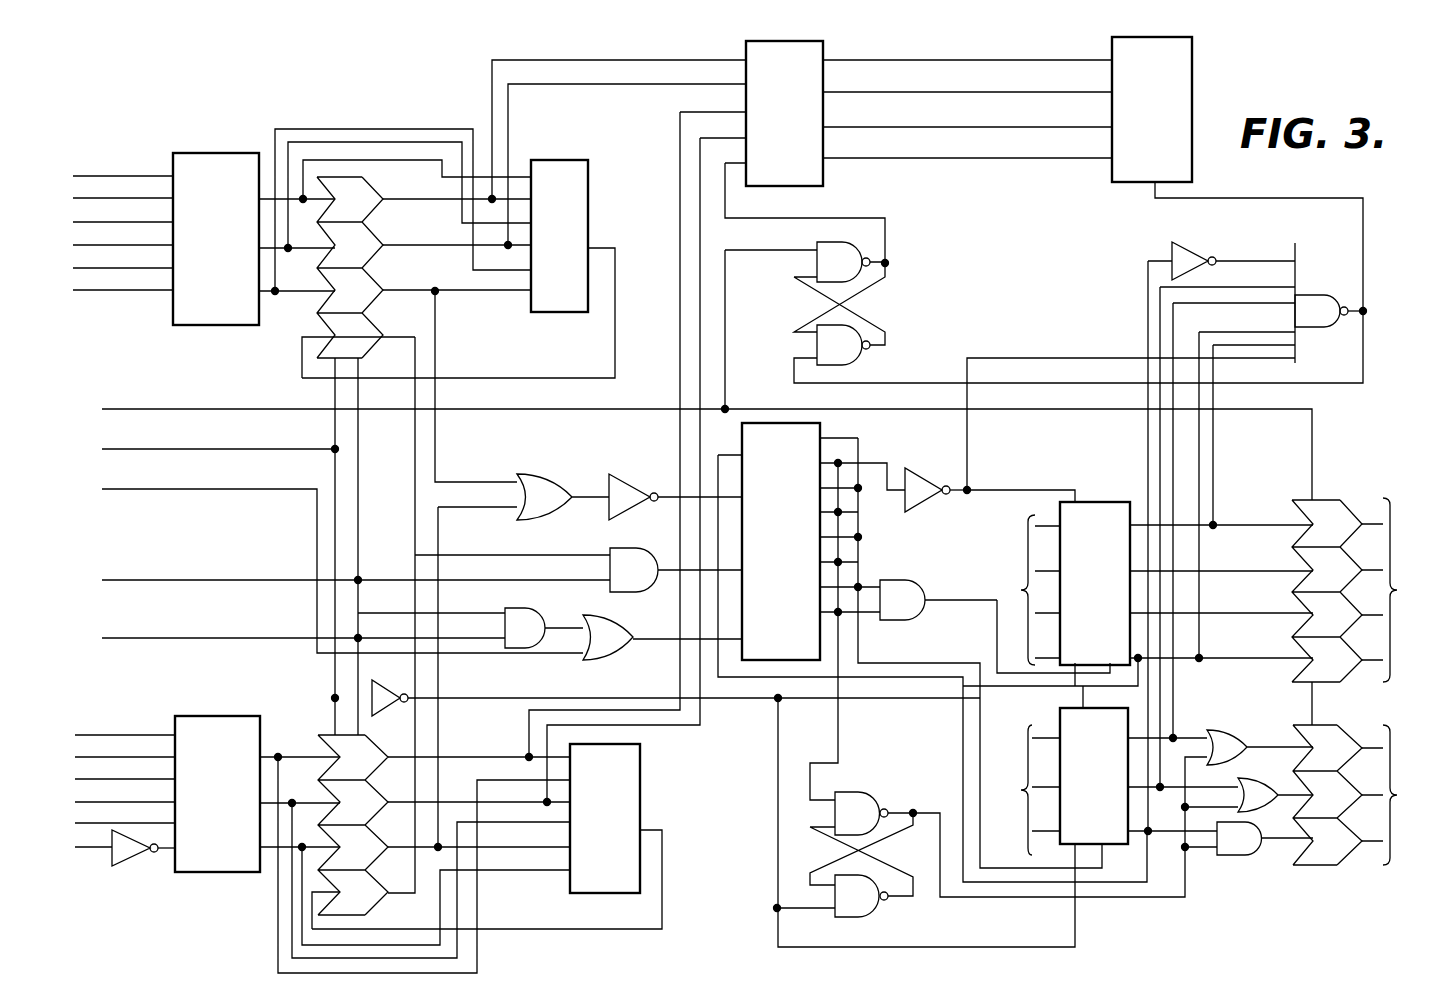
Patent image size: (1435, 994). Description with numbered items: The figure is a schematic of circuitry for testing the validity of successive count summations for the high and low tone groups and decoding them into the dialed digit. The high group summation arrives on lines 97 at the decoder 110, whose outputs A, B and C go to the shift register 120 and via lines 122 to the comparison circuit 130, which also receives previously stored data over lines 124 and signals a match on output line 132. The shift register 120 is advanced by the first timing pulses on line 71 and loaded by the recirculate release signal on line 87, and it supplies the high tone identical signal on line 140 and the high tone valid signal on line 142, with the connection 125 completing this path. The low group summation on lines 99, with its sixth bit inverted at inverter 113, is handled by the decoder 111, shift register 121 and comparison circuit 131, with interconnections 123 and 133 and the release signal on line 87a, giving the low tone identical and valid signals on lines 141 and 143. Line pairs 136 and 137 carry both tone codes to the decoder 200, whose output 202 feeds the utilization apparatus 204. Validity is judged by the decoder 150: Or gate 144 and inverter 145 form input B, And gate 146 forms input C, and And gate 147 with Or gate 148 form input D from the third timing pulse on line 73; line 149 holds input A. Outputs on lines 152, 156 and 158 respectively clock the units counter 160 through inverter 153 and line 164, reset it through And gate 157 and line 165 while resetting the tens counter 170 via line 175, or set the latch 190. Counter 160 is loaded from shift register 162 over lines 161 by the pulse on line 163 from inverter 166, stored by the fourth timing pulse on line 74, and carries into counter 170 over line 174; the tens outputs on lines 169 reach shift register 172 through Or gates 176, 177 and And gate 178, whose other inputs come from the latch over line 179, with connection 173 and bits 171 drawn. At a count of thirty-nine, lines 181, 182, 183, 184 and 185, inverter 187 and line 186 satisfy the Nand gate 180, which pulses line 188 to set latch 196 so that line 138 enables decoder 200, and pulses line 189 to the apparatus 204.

The lines 97 is at (149, 152).
The read only memory decoding circuit 110 is at (205, 153).
The lines 122 is at (324, 123).
The shift register 120 is at (352, 165).
The lines 124 is at (423, 177).
The comparison circuit 130 is at (575, 160).
The output line 132 is at (488, 378).
The line pair 136 is at (512, 54).
The decoder 200 is at (823, 180).
The output line 202 is at (958, 62).
The utilization apparatus 204 is at (1112, 182).
The line pair 137 is at (669, 206).
The line from comparator to decoder 125 is at (470, 718).
The output line 138 is at (878, 218).
The latch circuit 196 is at (898, 287).
The line 188 is at (950, 383).
The input line 186 is at (1115, 358).
The line 189 is at (1262, 198).
The inverter 187 is at (1172, 245).
The Nand gate 180 is at (1335, 282).
The line 181 is at (1213, 425).
The line 182 is at (1199, 446).
The line 183 is at (1173, 470).
The line 184 is at (1160, 493).
The line 185 is at (1148, 513).
The line 74 is at (205, 408).
The line 71 is at (228, 448).
The S3 signal line 73 is at (246, 490).
The line 87 is at (245, 580).
The line 87a is at (228, 638).
The line 141 is at (415, 597).
The line 140 is at (415, 530).
The line 142 is at (437, 435).
The line 143 is at (438, 540).
The Or gate 144 is at (550, 478).
The inverter 145 is at (640, 475).
The And gate 146 is at (625, 592).
The And gate 147 is at (530, 612).
The Or gate 148 is at (600, 660).
The inverter 166 is at (385, 705).
The decoder circuit 150 is at (833, 431).
The line 156 is at (860, 518).
The line 152 is at (880, 460).
The inverter 153 is at (932, 468).
The line 164 is at (1045, 488).
The And gate 157 is at (898, 582).
The line 165 is at (980, 605).
The line 175 is at (975, 663).
The line 163 is at (992, 690).
The line 174 is at (1140, 686).
The line 149 is at (745, 705).
The line 158 is at (838, 722).
The latching circuit 190 is at (873, 762).
The line from counter to flip-flop 173 is at (1040, 948).
The line 179 is at (1185, 900).
The units counter 160 is at (1115, 488).
The shift register output lines 161 is at (1216, 590).
The shift register 162 is at (1340, 508).
The tens counter 170 is at (1123, 858).
The counter lines 171 is at (1215, 795).
The Or gate 176 is at (1218, 728).
The Or gate 177 is at (1268, 780).
The And gate 178 is at (1240, 858).
The shift register 172 is at (1320, 868).
The lines 169 is at (1169, 844).
The decoder 111 is at (230, 716).
The lines 99 is at (127, 725).
The inverter 113 is at (135, 860).
The shift register 121 is at (320, 923).
The decoder output lines to comparator 123 is at (480, 950).
The comparison circuit 131 is at (577, 893).
The comparator output line 133 is at (565, 930).